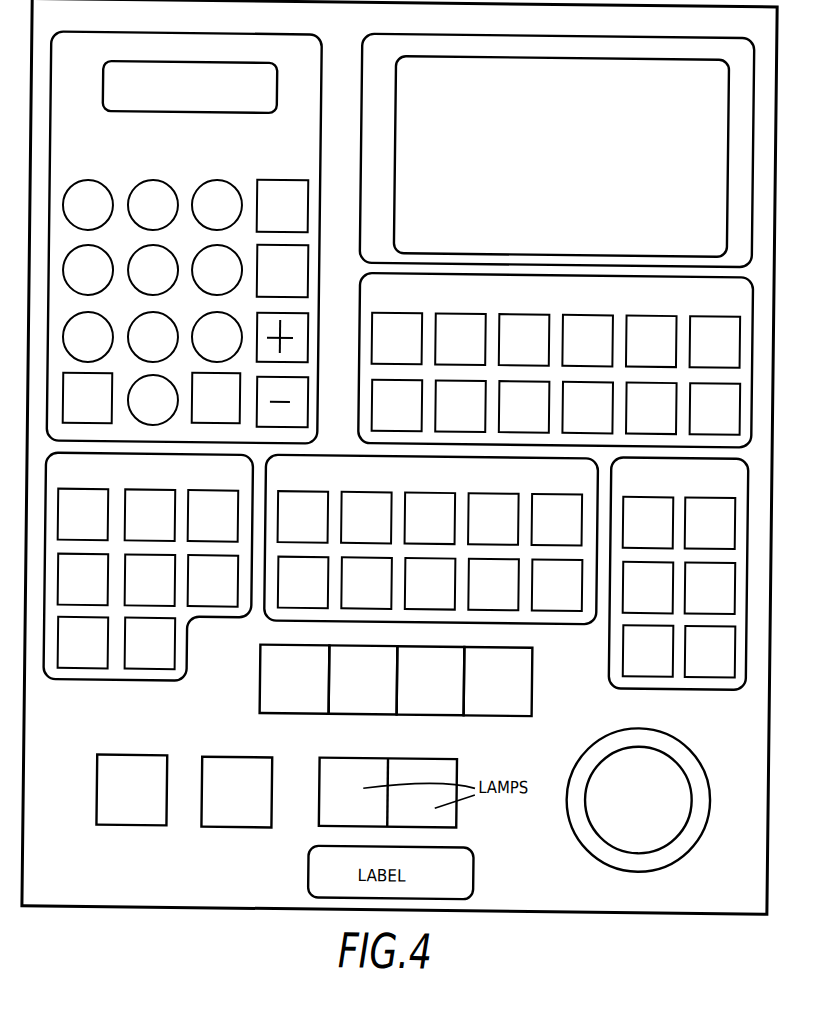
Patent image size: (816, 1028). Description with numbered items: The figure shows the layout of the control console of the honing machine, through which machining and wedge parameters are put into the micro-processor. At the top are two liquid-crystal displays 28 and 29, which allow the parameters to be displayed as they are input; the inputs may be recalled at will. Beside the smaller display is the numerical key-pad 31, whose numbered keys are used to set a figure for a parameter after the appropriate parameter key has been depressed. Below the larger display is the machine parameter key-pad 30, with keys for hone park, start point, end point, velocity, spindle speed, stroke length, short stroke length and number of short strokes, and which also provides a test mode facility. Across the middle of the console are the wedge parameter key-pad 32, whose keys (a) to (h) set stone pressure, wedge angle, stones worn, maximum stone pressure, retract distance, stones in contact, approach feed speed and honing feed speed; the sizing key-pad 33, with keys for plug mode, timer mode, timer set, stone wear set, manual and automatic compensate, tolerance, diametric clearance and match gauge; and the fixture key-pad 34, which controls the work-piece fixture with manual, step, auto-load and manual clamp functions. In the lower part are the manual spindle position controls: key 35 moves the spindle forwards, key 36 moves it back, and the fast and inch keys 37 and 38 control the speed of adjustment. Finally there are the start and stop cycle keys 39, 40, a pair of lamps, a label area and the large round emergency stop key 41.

The liquid-crystal display 28 is at (243, 110).
The liquid-crystal display 29 is at (574, 164).
The machine parameter key-pad 30 is at (688, 305).
The numerical key-pad 31 is at (196, 168).
The wedge parameter key-pad 32 is at (240, 484).
The sizing key-pad 33 is at (573, 484).
The fixture key-pad 34 is at (746, 484).
The forward key 35 is at (353, 726).
The back key 36 is at (506, 724).
The fast key 37 is at (441, 725).
The inch key 38 is at (256, 719).
The start cycle key 39 is at (129, 835).
The stop cycle key 40 is at (231, 835).
The emergency stop key 41 is at (657, 810).